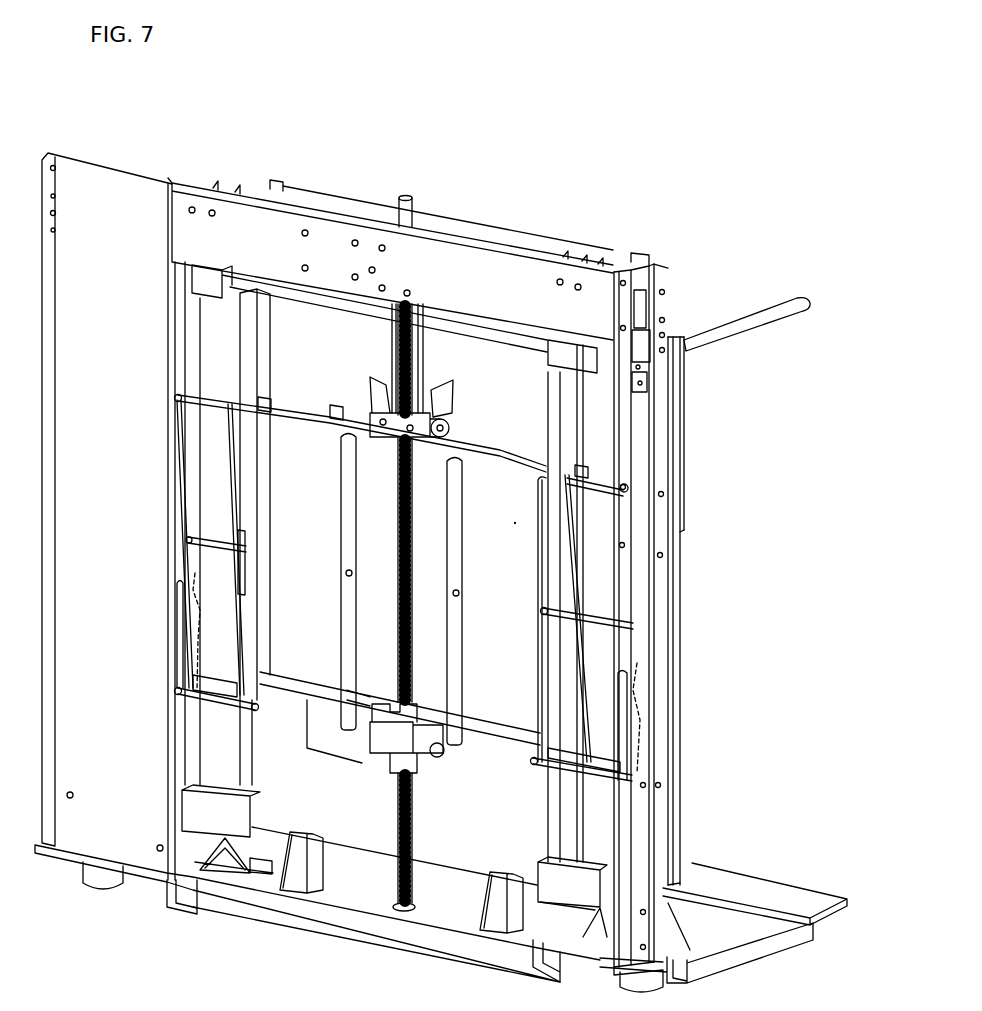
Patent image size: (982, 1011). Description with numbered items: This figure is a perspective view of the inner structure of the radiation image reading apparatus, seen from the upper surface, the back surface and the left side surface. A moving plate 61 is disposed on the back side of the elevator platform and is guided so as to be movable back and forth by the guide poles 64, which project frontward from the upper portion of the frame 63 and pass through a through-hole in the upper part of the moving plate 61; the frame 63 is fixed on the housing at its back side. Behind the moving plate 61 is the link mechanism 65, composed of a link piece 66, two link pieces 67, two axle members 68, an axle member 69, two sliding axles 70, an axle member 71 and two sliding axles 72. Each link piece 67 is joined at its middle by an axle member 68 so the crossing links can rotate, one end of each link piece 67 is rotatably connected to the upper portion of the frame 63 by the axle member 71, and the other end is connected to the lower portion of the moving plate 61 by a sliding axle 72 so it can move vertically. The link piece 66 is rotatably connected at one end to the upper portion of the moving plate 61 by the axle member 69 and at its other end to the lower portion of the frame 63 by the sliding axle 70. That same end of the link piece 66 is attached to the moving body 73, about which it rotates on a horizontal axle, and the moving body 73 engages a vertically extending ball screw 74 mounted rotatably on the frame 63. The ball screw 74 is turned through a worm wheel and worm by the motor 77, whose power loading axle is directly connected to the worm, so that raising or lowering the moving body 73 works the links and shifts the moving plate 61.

The moving plate 61 is at (680, 450).
The frame 63 is at (510, 262).
The guide poles 64 is at (764, 320).
The link mechanism 65 is at (178, 540).
The link piece 66 is at (515, 522).
The link pieces 67 is at (200, 475).
The axle members 68 is at (215, 540).
The axle member 69 is at (327, 405).
The sliding axles 70 is at (222, 698).
The axle member 71 is at (325, 412).
The sliding axles 72 is at (215, 693).
The moving body 73 is at (385, 755).
The ball screw 74 is at (413, 840).
The motor 77 is at (342, 205).